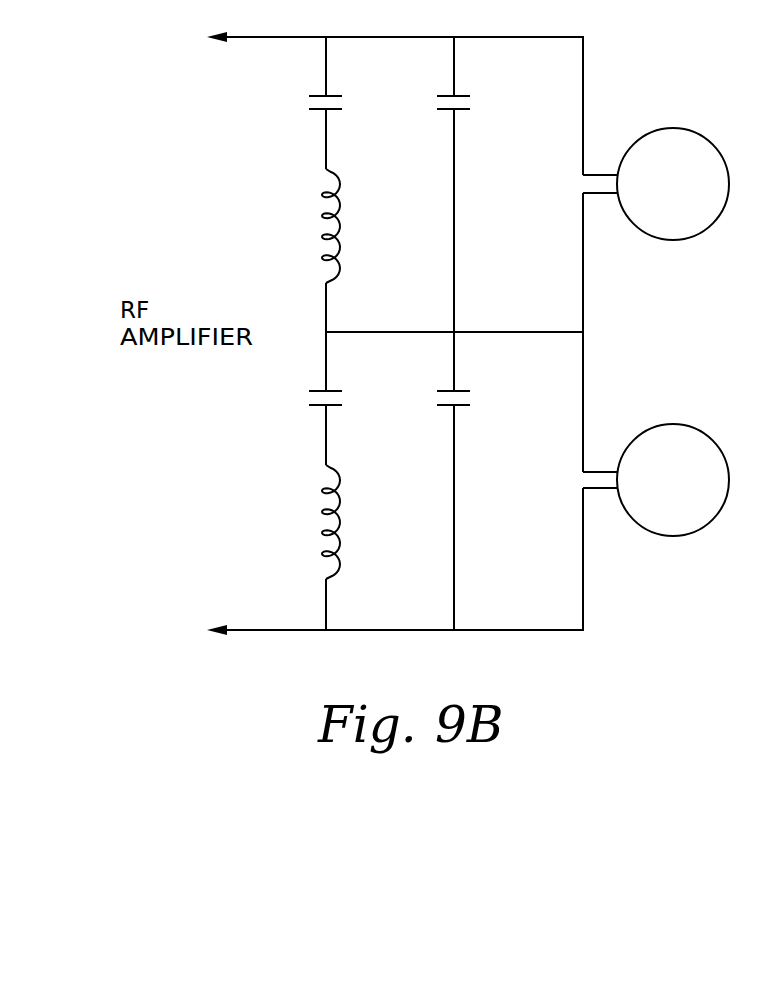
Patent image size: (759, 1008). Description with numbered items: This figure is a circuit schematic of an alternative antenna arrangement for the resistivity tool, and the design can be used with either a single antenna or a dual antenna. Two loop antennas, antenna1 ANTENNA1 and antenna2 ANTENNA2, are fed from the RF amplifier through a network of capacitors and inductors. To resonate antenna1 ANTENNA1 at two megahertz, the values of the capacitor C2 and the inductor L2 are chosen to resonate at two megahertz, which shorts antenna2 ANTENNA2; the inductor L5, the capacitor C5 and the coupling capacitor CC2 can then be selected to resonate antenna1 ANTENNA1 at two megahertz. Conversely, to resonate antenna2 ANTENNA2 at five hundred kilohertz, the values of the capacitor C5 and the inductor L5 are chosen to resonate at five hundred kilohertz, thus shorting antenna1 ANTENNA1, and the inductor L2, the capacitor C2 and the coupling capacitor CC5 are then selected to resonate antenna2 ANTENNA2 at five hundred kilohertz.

The capacitor C5 is at (344, 104).
The coupling capacitor CC2 is at (481, 104).
The inductor L5 is at (351, 226).
The capacitor C2 is at (346, 400).
The coupling capacitor CC5 is at (482, 400).
The inductor L2 is at (351, 522).
The antenna1 ANTENNA1 is at (663, 207).
The antenna2 ANTENNA2 is at (663, 503).